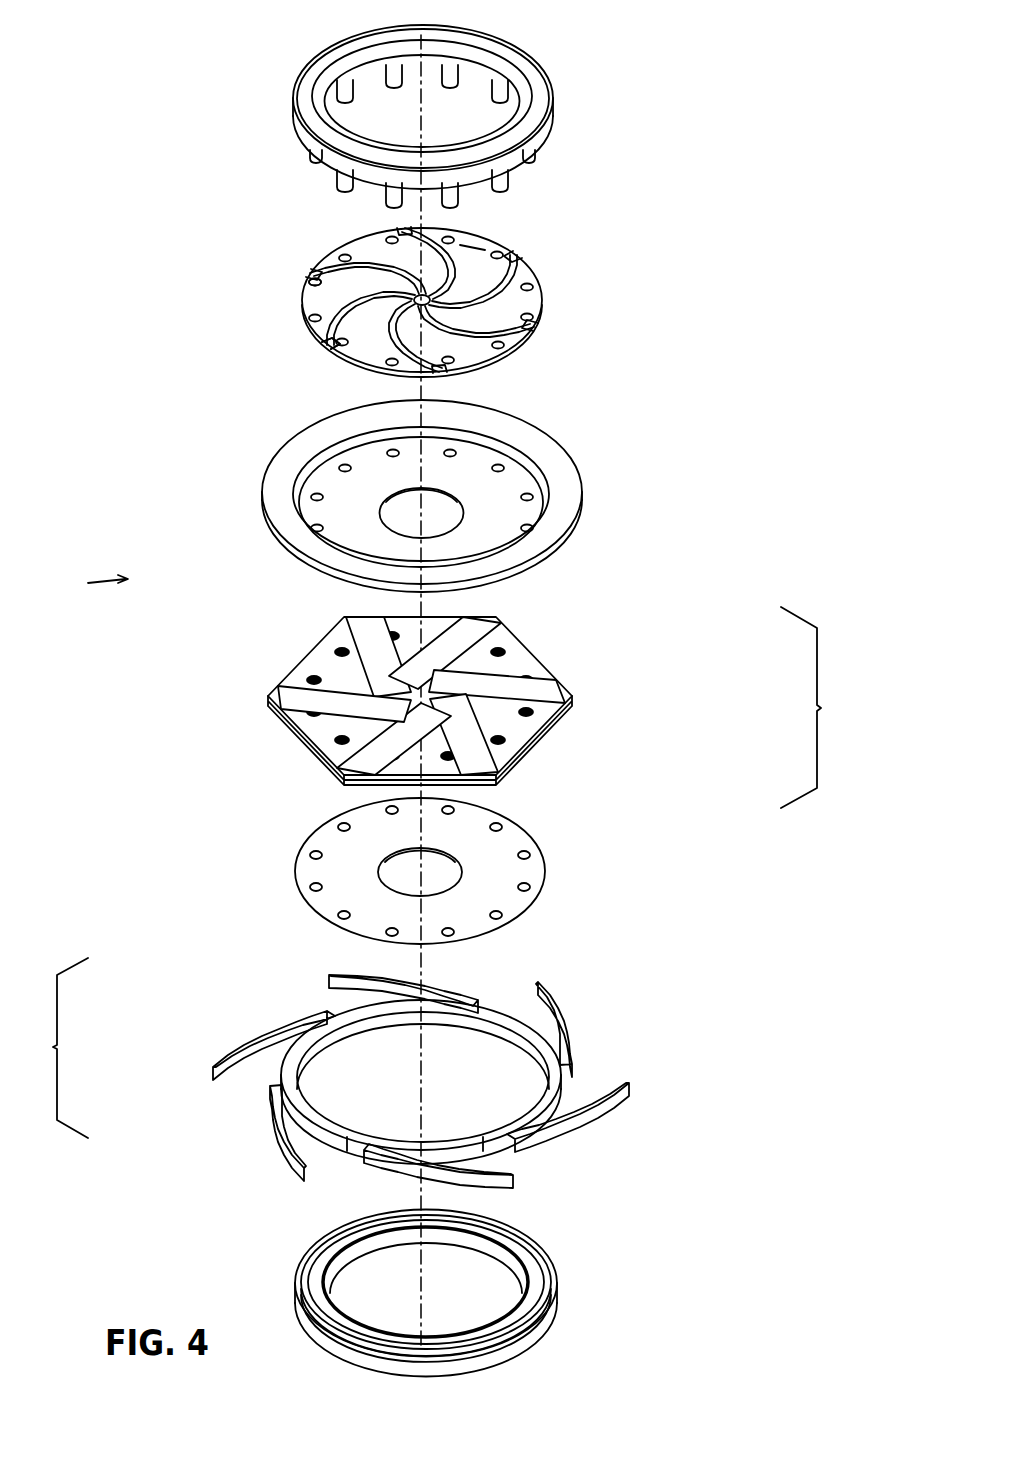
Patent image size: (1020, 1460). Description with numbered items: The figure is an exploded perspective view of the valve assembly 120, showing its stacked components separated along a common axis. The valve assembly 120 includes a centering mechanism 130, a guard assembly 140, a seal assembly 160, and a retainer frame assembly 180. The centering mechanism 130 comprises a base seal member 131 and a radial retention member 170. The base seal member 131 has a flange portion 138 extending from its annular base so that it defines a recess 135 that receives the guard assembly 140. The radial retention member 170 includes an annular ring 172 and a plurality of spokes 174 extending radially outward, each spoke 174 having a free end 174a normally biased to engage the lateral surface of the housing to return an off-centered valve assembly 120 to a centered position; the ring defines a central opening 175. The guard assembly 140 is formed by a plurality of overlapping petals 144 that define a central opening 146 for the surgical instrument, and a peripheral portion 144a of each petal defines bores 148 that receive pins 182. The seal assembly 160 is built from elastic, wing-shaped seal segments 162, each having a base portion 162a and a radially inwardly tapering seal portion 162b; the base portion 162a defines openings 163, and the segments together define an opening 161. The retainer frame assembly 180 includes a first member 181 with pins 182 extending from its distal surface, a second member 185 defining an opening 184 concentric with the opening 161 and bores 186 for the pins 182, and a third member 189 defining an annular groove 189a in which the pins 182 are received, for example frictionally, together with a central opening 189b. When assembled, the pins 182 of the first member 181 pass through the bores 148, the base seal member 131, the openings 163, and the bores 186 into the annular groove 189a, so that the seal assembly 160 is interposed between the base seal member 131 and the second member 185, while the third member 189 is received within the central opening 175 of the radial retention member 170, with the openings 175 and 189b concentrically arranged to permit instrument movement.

The valve assembly 120 is at (90, 582).
The centering mechanism 130 is at (55, 1048).
The base seal member 131 is at (359, 693).
The recess 135 is at (468, 473).
The flange portion 138 is at (387, 482).
The guard assembly 140 is at (413, 299).
The petals 144 is at (487, 225).
The peripheral portion 144a is at (325, 366).
The central opening 146 is at (374, 258).
The bores 148 is at (282, 297).
The seal assembly 160 is at (419, 682).
The opening 161 is at (510, 678).
The seal segments 162 is at (349, 739).
The base portion 162a is at (334, 671).
The seal portion 162b is at (354, 638).
The openings 163 is at (491, 610).
The radial retention member 170 is at (363, 1072).
The annular ring 172 is at (365, 991).
The spokes 174 is at (574, 1016).
The free end 174a is at (252, 1045).
The central opening 175 is at (451, 1082).
The retainer frame assembly 180 is at (819, 707).
The first member 181 is at (530, 329).
The pins 182 is at (422, 106).
The opening 184 is at (487, 872).
The second member 185 is at (425, 861).
The bores 186 is at (288, 866).
The third member 189 is at (527, 1081).
The annular groove 189a is at (464, 1293).
The central opening 189b is at (403, 1270).